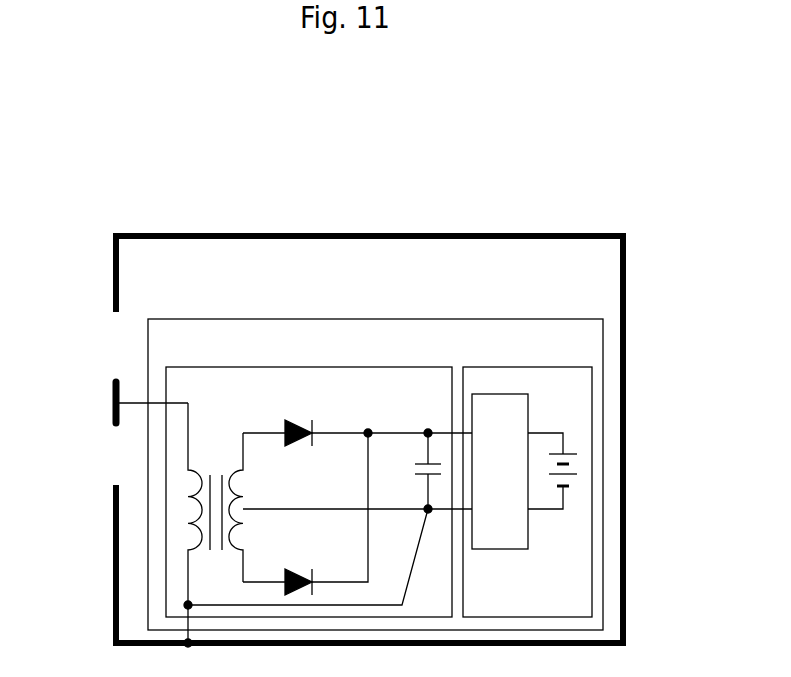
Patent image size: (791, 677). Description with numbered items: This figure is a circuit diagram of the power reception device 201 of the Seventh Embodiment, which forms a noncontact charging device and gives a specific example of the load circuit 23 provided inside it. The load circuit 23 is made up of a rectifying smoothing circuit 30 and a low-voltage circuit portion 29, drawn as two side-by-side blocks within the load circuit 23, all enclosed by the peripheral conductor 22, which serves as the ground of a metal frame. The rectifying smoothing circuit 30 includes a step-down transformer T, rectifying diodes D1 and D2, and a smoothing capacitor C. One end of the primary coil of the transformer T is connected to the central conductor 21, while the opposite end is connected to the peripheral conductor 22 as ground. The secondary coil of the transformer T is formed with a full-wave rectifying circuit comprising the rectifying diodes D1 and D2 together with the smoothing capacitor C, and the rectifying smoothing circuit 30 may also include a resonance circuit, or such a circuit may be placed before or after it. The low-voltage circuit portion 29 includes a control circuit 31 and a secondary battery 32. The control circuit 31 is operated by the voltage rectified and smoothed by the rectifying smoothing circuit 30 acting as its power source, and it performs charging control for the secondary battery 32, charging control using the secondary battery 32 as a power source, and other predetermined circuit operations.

The power reception device 201 is at (517, 164).
The peripheral conductor 22 is at (623, 230).
The central conductor 21 is at (110, 394).
The load circuit 23 is at (468, 319).
The rectifying smoothing circuit 30 is at (375, 367).
The low-voltage circuit portion 29 is at (592, 365).
The control circuit 31 is at (498, 394).
The secondary battery 32 is at (583, 467).
The step-down transformer T is at (215, 467).
The rectifying diode D1 is at (357, 416).
The rectifying diode D2 is at (305, 514).
The smoothing capacitor C is at (419, 473).